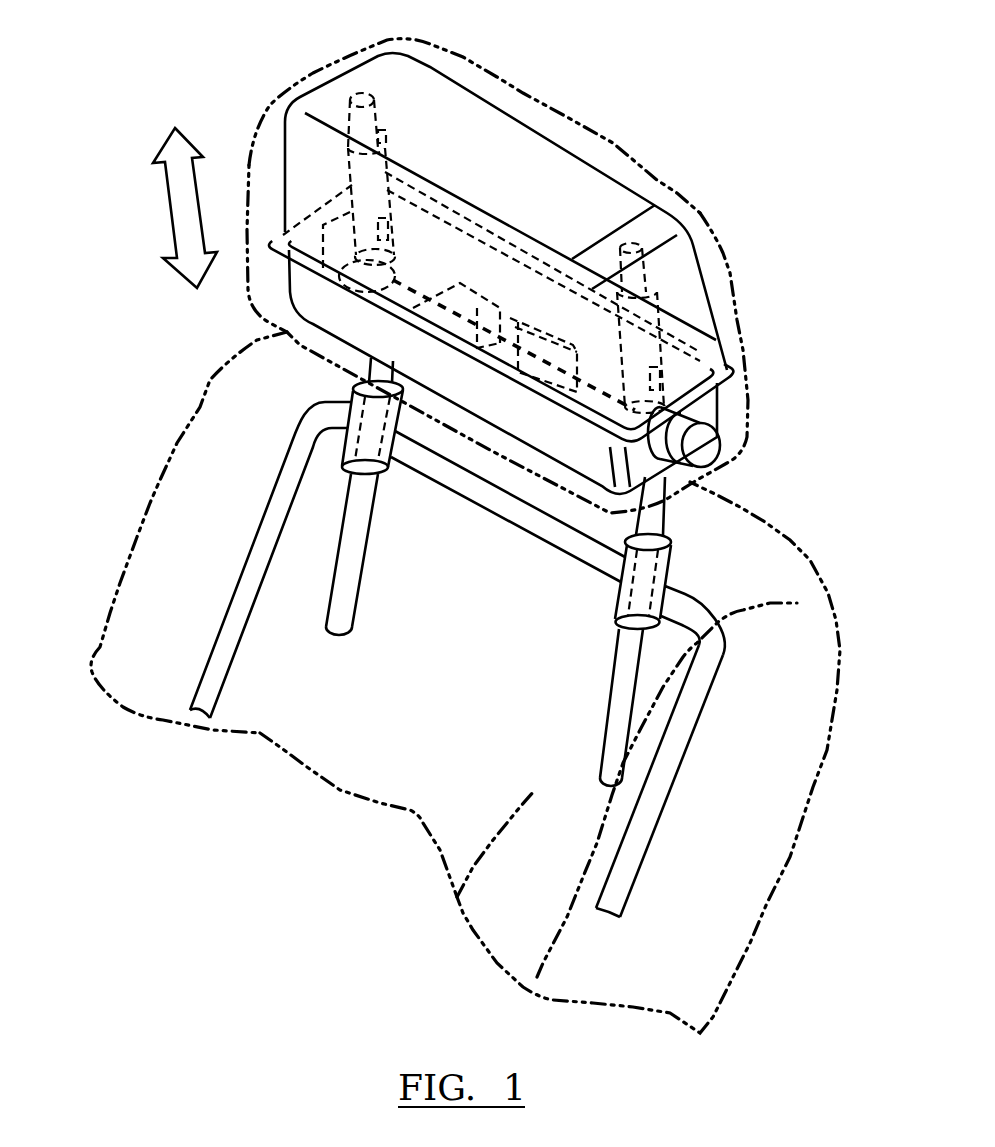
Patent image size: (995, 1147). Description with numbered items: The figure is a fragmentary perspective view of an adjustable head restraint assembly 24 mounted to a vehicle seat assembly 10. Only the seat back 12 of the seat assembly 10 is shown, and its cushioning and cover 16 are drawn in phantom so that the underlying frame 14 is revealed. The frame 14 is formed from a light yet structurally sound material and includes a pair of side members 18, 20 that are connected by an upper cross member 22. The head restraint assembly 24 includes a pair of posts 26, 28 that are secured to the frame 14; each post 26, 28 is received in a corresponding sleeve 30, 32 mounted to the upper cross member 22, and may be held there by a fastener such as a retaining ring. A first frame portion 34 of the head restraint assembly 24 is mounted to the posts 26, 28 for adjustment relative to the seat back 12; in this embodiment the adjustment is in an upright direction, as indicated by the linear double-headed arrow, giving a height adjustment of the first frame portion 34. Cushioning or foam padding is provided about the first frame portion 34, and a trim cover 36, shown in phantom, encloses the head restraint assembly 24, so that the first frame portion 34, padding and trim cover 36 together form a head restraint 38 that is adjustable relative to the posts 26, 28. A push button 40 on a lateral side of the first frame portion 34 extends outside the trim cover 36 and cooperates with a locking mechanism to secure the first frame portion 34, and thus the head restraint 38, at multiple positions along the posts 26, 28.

The seat assembly 10 is at (445, 516).
The seat back 12 is at (136, 508).
The frame 14 is at (489, 650).
The cover 16 is at (127, 562).
The side member 18 is at (289, 452).
The side member 20 is at (670, 797).
The upper cross member 22 is at (688, 597).
The head restraint assembly 24 is at (512, 56).
The post 26 is at (357, 597).
The post 28 is at (610, 703).
The sleeve 30 is at (389, 470).
The sleeve 32 is at (615, 602).
The first frame portion 34 is at (719, 283).
The trim cover 36 is at (752, 352).
The head restraint 38 is at (618, 140).
The push button 40 is at (707, 443).